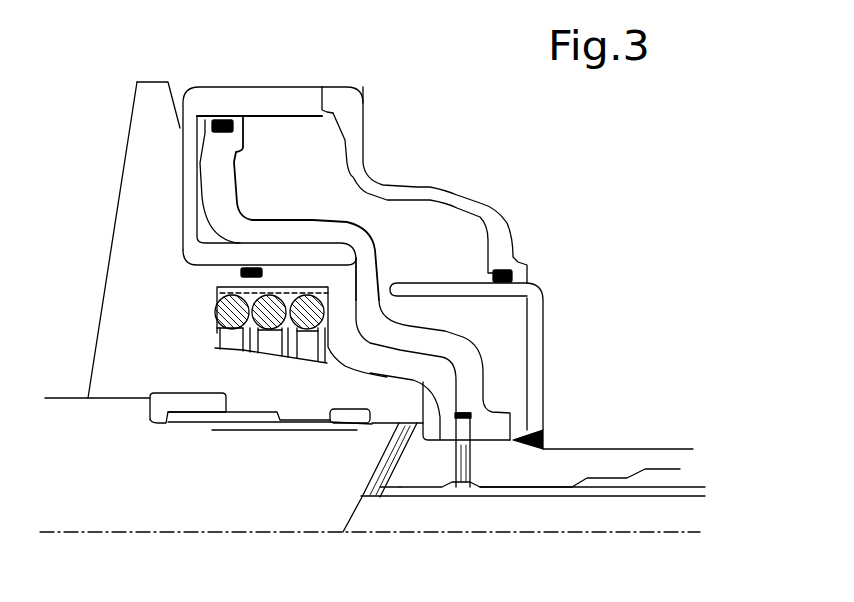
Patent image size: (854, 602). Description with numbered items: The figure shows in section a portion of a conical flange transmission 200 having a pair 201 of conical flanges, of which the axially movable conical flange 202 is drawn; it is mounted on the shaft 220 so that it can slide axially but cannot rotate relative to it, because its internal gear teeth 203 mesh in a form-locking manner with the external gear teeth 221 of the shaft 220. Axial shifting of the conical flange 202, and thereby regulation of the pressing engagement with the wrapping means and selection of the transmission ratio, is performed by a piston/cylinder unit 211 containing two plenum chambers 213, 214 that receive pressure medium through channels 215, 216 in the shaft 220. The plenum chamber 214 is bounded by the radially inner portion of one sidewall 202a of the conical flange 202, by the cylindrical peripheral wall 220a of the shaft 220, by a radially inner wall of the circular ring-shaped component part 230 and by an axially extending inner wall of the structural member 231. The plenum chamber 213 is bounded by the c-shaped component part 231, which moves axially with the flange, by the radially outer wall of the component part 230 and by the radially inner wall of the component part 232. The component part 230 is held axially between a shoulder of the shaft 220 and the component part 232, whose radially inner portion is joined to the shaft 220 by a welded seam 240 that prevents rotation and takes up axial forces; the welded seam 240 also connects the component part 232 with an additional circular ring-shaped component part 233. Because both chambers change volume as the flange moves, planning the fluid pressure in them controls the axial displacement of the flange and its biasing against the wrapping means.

The conical flange transmission 200 is at (422, 92).
The pair of conical flanges 201 is at (95, 106).
The axially movable conical flange 202 is at (118, 275).
The sidewall of the axially movable conical flange 202a is at (251, 353).
The internal gear teeth 203 is at (245, 400).
The piston/cylinder unit 211 is at (479, 151).
The plenum chamber 213 is at (225, 230).
The plenum chamber 214 is at (318, 358).
The channel 215 is at (381, 490).
The channel 216 is at (467, 440).
The shaft 220 is at (228, 517).
The cylindrical peripheral wall of the shaft 220a is at (367, 434).
The external gear teeth 221 is at (175, 414).
The circular ring-shaped component part 230 is at (410, 363).
The ring-shaped component part 231 is at (300, 257).
The circular ring-shaped component part 232 is at (368, 255).
The additional circular ring-shaped component part 233 is at (527, 297).
The welded seam 240 is at (543, 440).